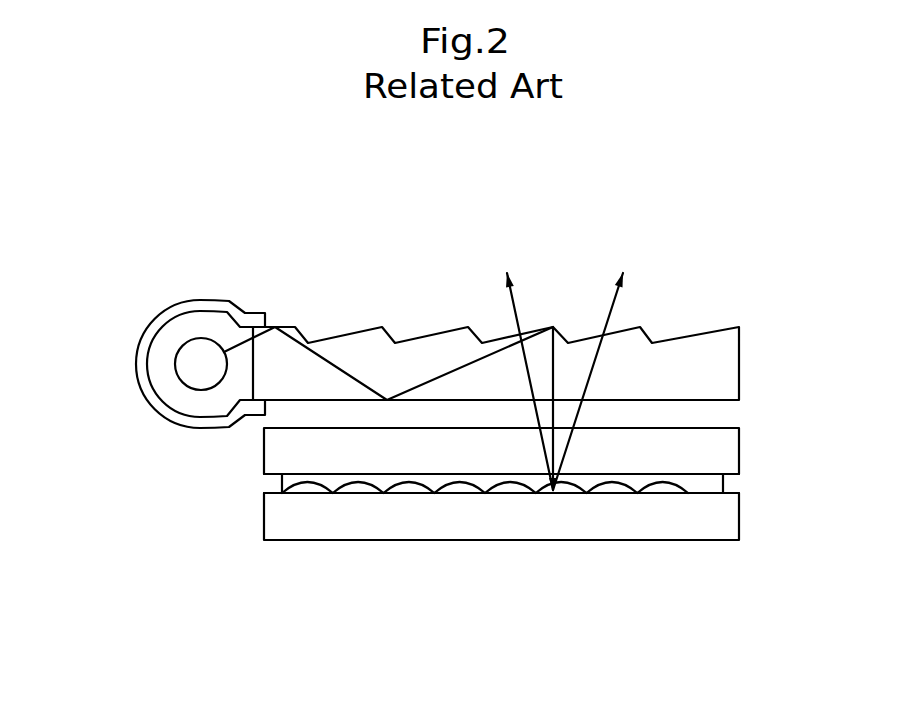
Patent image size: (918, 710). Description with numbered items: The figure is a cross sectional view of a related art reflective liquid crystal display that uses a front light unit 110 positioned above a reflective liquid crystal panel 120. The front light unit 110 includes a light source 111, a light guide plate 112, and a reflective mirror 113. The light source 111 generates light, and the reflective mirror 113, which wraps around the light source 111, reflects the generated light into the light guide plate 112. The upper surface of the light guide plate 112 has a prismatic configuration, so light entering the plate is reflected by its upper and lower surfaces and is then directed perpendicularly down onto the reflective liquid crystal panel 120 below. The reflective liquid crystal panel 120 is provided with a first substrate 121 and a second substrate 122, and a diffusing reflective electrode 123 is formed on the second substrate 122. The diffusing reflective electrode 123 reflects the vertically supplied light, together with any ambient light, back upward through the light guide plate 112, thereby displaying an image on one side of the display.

The front light unit 110 is at (434, 348).
The light source 111 is at (186, 364).
The light guide plate 112 is at (730, 353).
The reflective mirror 113 is at (205, 300).
The reflective liquid crystal panel 120 is at (563, 552).
The first substrate 121 is at (740, 452).
The second substrate 122 is at (652, 525).
The diffusing reflective electrode 123 is at (663, 492).